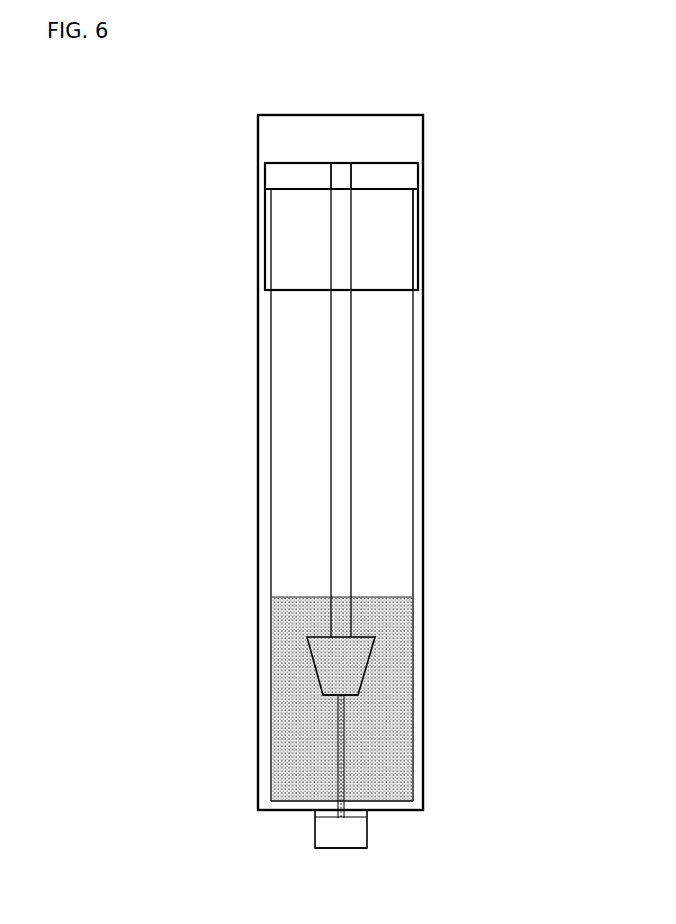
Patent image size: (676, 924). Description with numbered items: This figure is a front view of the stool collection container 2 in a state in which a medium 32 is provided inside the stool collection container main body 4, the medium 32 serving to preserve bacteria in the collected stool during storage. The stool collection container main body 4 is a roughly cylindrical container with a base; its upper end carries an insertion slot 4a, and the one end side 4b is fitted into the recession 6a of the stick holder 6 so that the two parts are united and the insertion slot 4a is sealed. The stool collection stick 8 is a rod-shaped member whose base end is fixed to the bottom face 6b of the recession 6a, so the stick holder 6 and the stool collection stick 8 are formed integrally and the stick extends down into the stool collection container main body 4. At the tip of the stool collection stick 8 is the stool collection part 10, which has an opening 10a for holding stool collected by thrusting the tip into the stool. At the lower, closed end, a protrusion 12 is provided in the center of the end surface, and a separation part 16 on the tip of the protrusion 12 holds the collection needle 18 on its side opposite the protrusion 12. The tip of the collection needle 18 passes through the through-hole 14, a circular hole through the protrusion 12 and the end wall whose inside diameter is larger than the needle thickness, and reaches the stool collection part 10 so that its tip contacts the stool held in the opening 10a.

The stool collection container 2 is at (455, 108).
The stool collection container main body 4 is at (423, 468).
The insertion slot 4a is at (396, 194).
The one end side 4b is at (414, 252).
The stick holder 6 is at (349, 114).
The recession 6a is at (295, 173).
The bottom face 6b is at (380, 170).
The stool collection stick 8 is at (345, 404).
The stool collection part 10 is at (372, 658).
The opening 10a is at (350, 698).
The protrusion 12 is at (372, 818).
The through-hole 14 is at (315, 817).
The separation part 16 is at (360, 845).
The collection needle 18 is at (345, 752).
The medium 32 is at (395, 612).